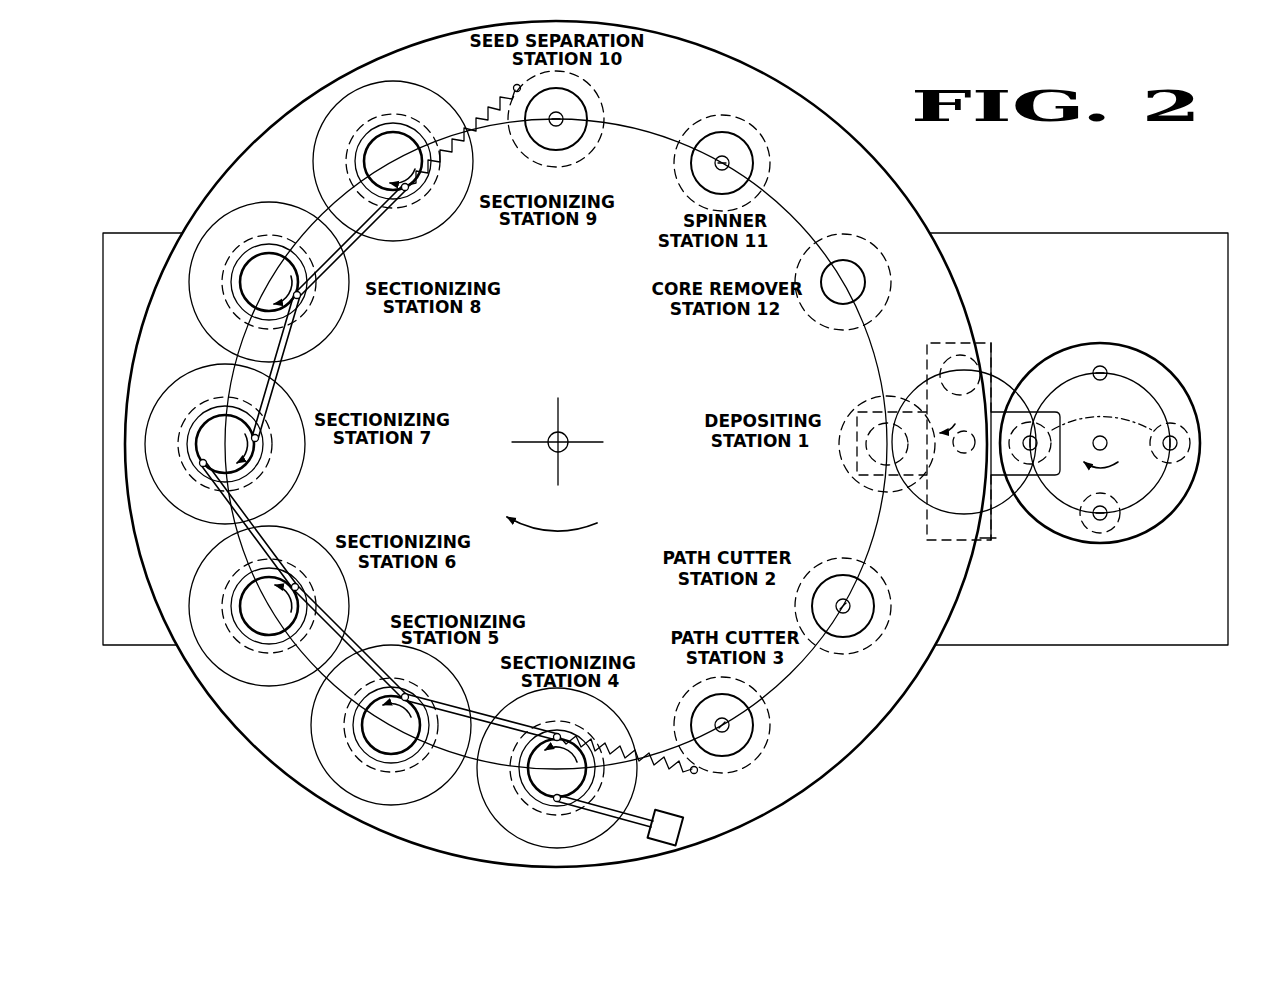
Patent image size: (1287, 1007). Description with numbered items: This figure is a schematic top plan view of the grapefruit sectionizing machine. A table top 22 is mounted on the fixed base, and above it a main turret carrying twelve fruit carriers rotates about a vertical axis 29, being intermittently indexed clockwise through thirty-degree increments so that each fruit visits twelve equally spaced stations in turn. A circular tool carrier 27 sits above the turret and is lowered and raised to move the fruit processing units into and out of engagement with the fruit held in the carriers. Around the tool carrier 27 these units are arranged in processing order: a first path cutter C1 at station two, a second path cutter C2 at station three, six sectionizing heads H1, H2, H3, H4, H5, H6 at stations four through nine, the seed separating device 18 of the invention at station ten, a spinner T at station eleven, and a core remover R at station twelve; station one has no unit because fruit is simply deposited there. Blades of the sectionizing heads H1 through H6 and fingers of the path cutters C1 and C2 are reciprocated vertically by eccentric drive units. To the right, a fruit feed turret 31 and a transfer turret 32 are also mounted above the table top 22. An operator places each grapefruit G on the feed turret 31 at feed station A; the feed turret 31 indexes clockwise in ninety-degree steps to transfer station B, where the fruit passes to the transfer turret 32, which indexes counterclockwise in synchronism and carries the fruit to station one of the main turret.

The table top 22 is at (1018, 630).
The tool carrier 27 is at (545, 341).
The vertical axis 29 is at (564, 438).
The seed separating device 18 is at (594, 104).
The spinner T is at (768, 162).
The core remover R is at (851, 266).
The first path cutter C1 is at (884, 592).
The second path cutter C2 is at (758, 714).
The sectionizing head H1 is at (530, 793).
The sectionizing head H2 is at (352, 720).
The sectionizing head H3 is at (233, 577).
The sectionizing head H4 is at (203, 397).
The sectionizing head H5 is at (268, 237).
The sectionizing head H6 is at (408, 122).
The fruit feed turret 31 is at (1199, 385).
The transfer turret 32 is at (1003, 538).
The transfer path of grapefruit G is at (1102, 418).
The feed station A is at (1172, 462).
The transfer station B is at (1040, 416).